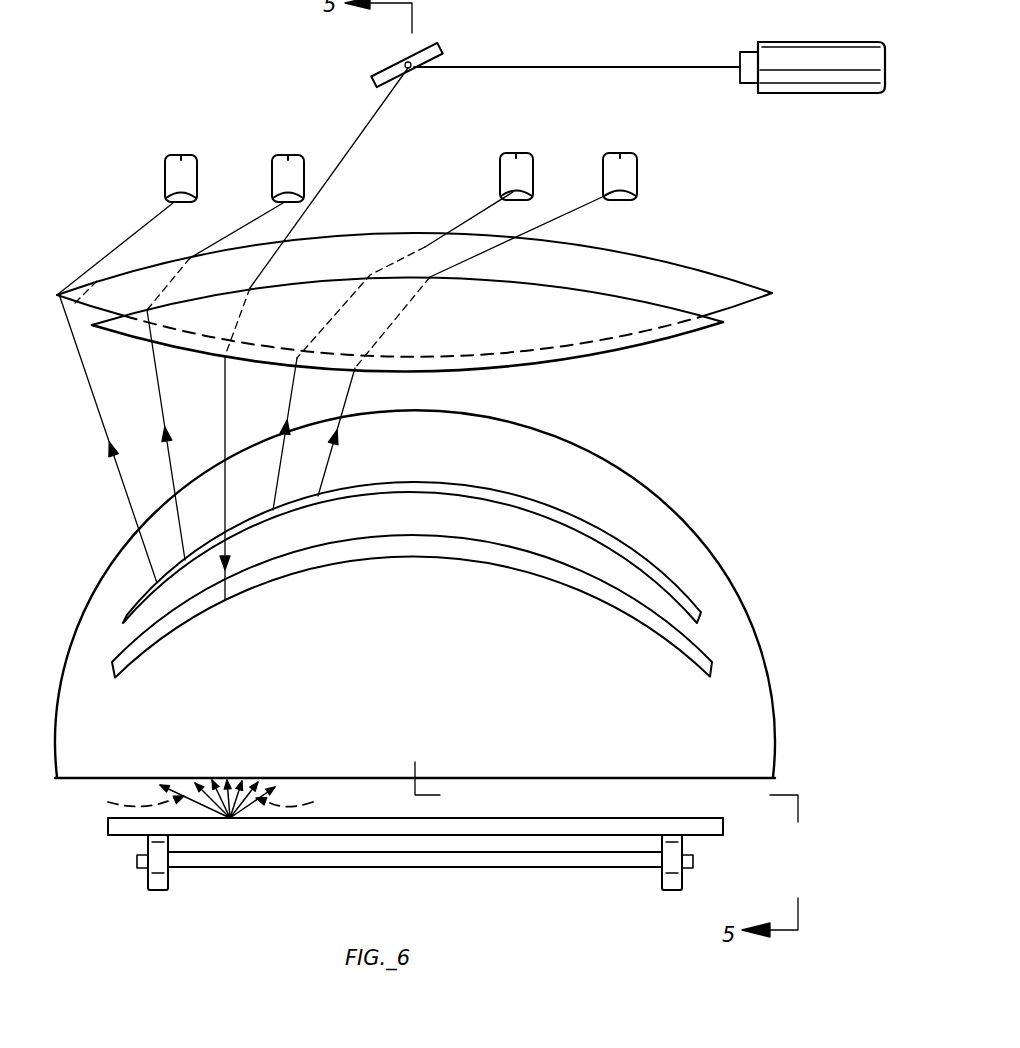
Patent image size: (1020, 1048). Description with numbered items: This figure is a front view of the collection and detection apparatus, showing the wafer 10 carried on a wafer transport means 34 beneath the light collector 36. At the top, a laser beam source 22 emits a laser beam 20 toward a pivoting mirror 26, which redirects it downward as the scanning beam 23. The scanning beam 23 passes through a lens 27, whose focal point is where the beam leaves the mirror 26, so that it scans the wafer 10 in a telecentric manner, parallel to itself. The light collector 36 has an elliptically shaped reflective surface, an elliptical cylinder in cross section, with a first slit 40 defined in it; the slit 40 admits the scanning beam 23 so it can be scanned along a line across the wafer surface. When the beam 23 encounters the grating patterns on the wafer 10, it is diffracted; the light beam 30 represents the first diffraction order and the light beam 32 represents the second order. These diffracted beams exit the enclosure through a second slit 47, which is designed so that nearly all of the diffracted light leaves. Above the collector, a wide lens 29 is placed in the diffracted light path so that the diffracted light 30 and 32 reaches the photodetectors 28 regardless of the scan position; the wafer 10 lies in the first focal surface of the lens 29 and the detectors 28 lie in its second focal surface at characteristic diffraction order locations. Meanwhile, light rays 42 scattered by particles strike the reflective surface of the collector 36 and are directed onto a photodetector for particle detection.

The wafer 10 is at (665, 818).
The laser beam 20 is at (547, 67).
The laser beam source 22 is at (854, 93).
The scanning beam 23 is at (226, 466).
The mirror 26 is at (373, 81).
The lens 27 is at (630, 349).
The photodetectors 28 is at (186, 157).
The lens 29 is at (666, 263).
The light beam 30 is at (159, 373).
The light beam 32 is at (127, 497).
The wafer transport means 34 is at (160, 890).
The light collector 36 is at (750, 701).
The first slit 40 is at (520, 558).
The light rays 42 is at (208, 799).
The second slit 47 is at (512, 495).